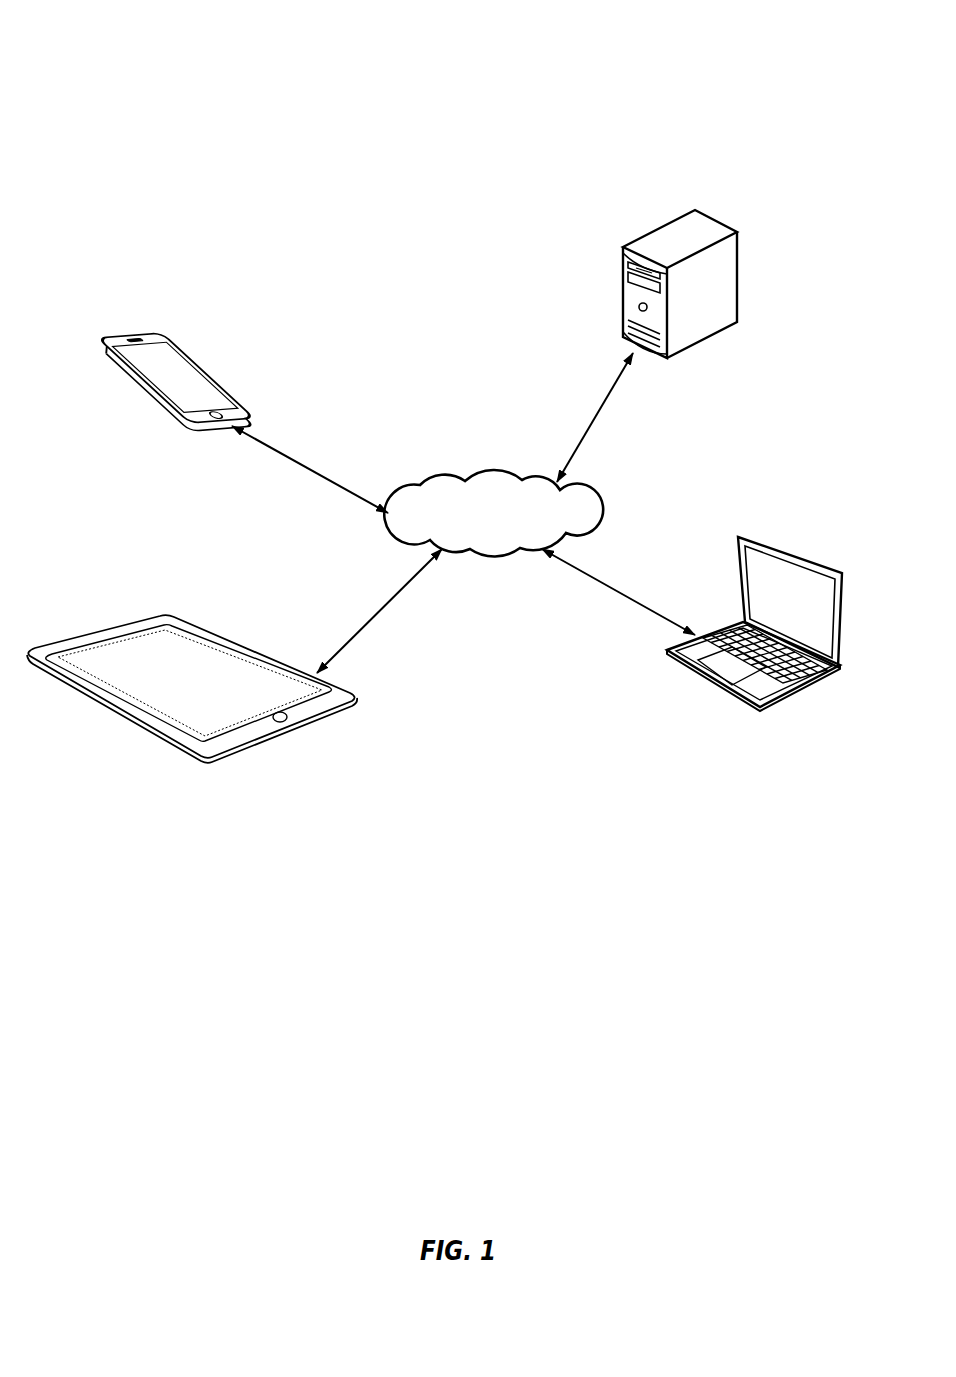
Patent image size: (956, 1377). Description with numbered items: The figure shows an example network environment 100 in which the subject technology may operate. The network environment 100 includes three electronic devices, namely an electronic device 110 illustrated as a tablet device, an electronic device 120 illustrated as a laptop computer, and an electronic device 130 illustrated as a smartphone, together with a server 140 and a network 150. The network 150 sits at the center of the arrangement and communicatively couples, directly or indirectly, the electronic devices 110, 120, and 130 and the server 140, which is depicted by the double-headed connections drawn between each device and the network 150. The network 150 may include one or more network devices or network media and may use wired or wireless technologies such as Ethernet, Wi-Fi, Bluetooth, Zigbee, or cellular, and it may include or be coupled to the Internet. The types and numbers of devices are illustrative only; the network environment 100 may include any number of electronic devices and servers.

The network environment 100 is at (52, 88).
The electronic device 110 is at (223, 753).
The electronic device 120 is at (727, 688).
The electronic device 130 is at (203, 367).
The server 140 is at (662, 222).
The network 150 is at (410, 485).